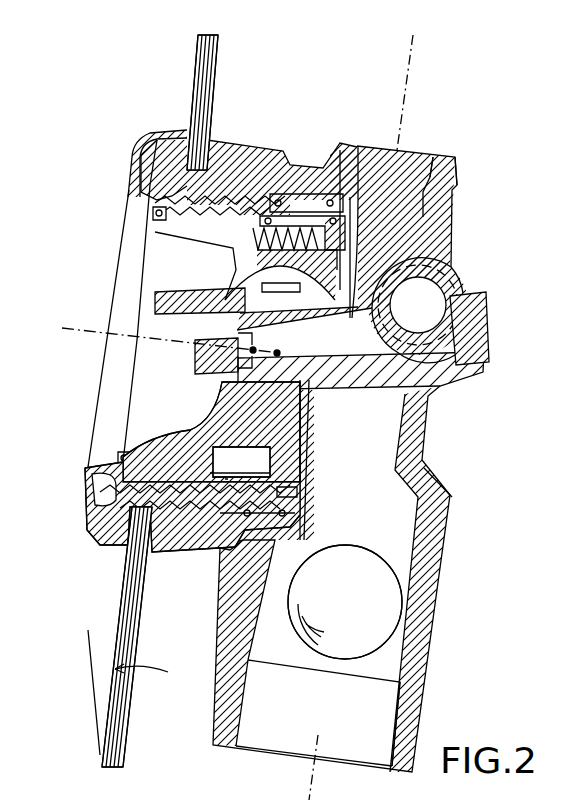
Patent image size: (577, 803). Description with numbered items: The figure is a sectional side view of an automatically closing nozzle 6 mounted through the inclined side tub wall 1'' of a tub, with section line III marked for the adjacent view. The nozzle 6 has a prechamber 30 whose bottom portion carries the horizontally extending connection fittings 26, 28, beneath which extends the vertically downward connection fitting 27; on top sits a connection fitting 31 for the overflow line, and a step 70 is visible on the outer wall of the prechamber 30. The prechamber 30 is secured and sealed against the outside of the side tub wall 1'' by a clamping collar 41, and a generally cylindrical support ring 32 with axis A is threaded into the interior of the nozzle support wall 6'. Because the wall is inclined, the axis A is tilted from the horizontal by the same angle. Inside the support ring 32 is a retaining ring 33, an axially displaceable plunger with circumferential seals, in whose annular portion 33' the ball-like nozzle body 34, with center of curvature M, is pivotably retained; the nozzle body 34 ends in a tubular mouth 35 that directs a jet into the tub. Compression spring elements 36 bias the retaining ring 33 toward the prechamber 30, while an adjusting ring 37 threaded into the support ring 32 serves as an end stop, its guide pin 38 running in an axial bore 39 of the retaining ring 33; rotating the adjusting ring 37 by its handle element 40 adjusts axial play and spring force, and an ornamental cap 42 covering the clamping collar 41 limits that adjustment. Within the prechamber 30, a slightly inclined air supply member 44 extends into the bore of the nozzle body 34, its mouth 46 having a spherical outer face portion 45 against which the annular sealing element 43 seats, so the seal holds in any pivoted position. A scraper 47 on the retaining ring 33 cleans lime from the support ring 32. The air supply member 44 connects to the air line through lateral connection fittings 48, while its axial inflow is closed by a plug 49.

The side tub wall 1'' is at (185, 102).
The automatically closing nozzle 6 is at (482, 130).
The nozzle support wall 6' is at (184, 398).
The connection fitting 26 is at (390, 599).
The connection fitting 28 is at (345, 602).
The connection fitting 27 is at (407, 713).
The prechamber 30 is at (390, 453).
The connection fitting 31 is at (420, 168).
The support ring 32 is at (231, 187).
The retaining ring 33 is at (302, 169).
The annular portion 33' is at (131, 303).
The nozzle body 34 is at (243, 292).
The tubular mouth 35 is at (167, 298).
The compression spring elements 36 is at (283, 193).
The adjusting ring 37 is at (175, 221).
The guide pin 38 is at (227, 550).
The axial bore 39 is at (265, 467).
The handle element 40 is at (140, 441).
The clamping collar 41 is at (160, 163).
The ornamental cap 42 is at (150, 137).
The annular sealing element 43 is at (240, 397).
The air supply member 44 is at (373, 383).
The outer face portion 45 is at (222, 360).
The mouth 46 is at (240, 336).
The scraper 47 is at (372, 195).
The lateral connection fittings 48 is at (428, 290).
The plug 49 is at (470, 322).
The step 70 is at (448, 490).
The axis A is at (158, 330).
The center of curvature M is at (279, 352).
The section line III- III is at (370, 30).